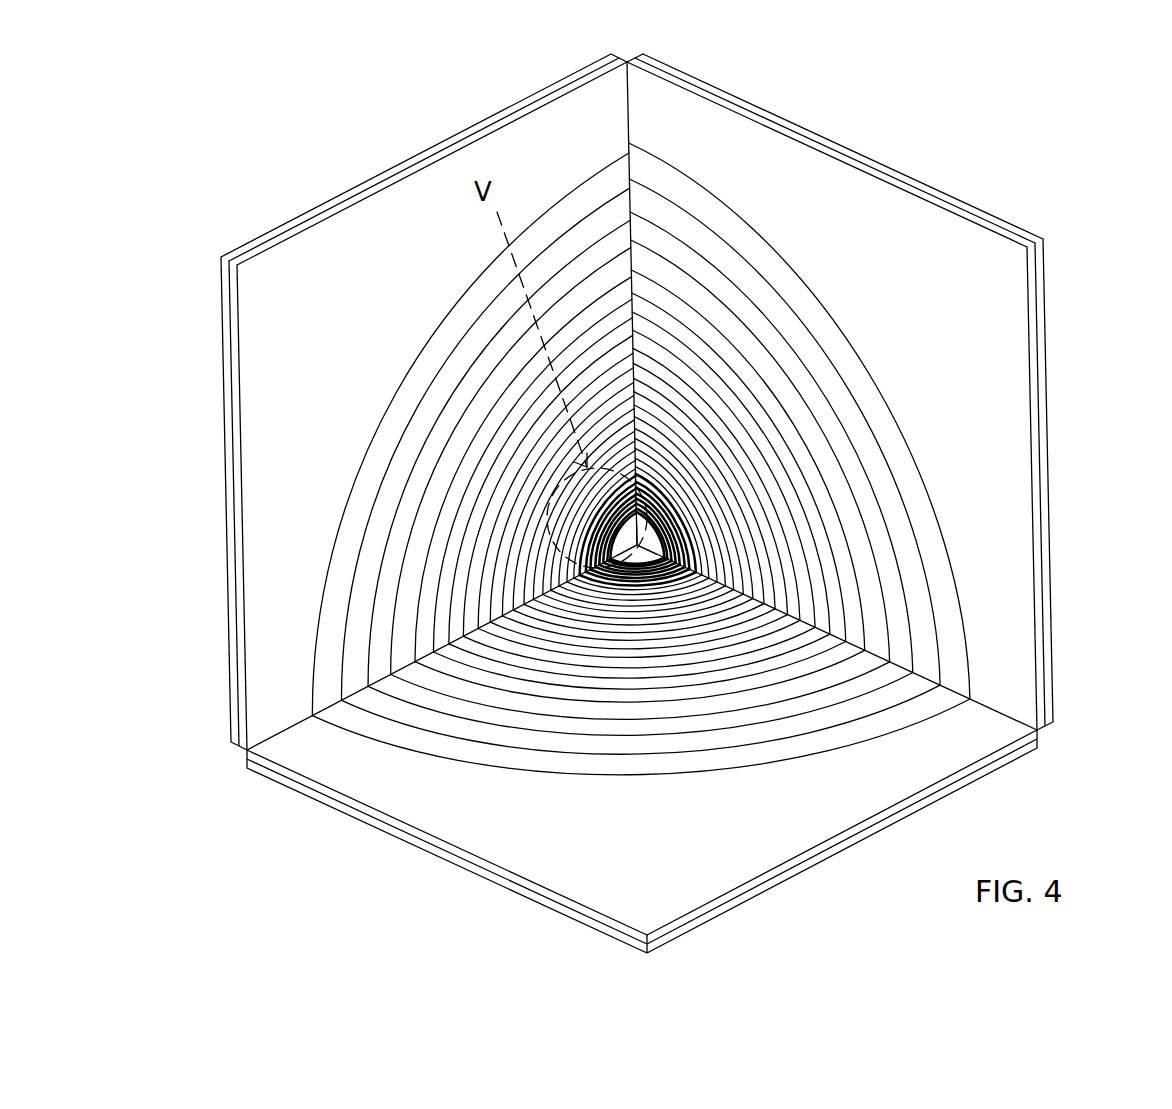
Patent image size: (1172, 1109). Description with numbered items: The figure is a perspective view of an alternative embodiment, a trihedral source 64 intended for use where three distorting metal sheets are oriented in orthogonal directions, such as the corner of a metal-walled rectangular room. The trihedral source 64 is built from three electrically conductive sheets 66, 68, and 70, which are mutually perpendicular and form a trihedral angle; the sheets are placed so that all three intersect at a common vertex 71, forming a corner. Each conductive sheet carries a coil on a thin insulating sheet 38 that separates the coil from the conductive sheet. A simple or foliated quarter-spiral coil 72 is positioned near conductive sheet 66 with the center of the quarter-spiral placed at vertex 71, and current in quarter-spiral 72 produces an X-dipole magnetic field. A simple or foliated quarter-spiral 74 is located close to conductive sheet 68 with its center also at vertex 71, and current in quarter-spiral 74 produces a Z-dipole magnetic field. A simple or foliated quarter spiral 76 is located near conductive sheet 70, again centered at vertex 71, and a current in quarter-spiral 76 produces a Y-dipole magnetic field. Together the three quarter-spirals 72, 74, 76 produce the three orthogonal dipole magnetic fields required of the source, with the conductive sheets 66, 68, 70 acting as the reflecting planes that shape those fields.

The thin insulating sheet 38 is at (237, 512).
The trihedral source 64 is at (652, 503).
The electrically conductive sheet 66 is at (232, 598).
The electrically conductive sheet 68 is at (453, 864).
The electrically conductive sheet 70 is at (1052, 593).
The common vertex 71 is at (652, 541).
The quarter-spiral coil 72 is at (388, 410).
The quarter-spiral 74 is at (738, 768).
The quarter spiral 76 is at (880, 393).